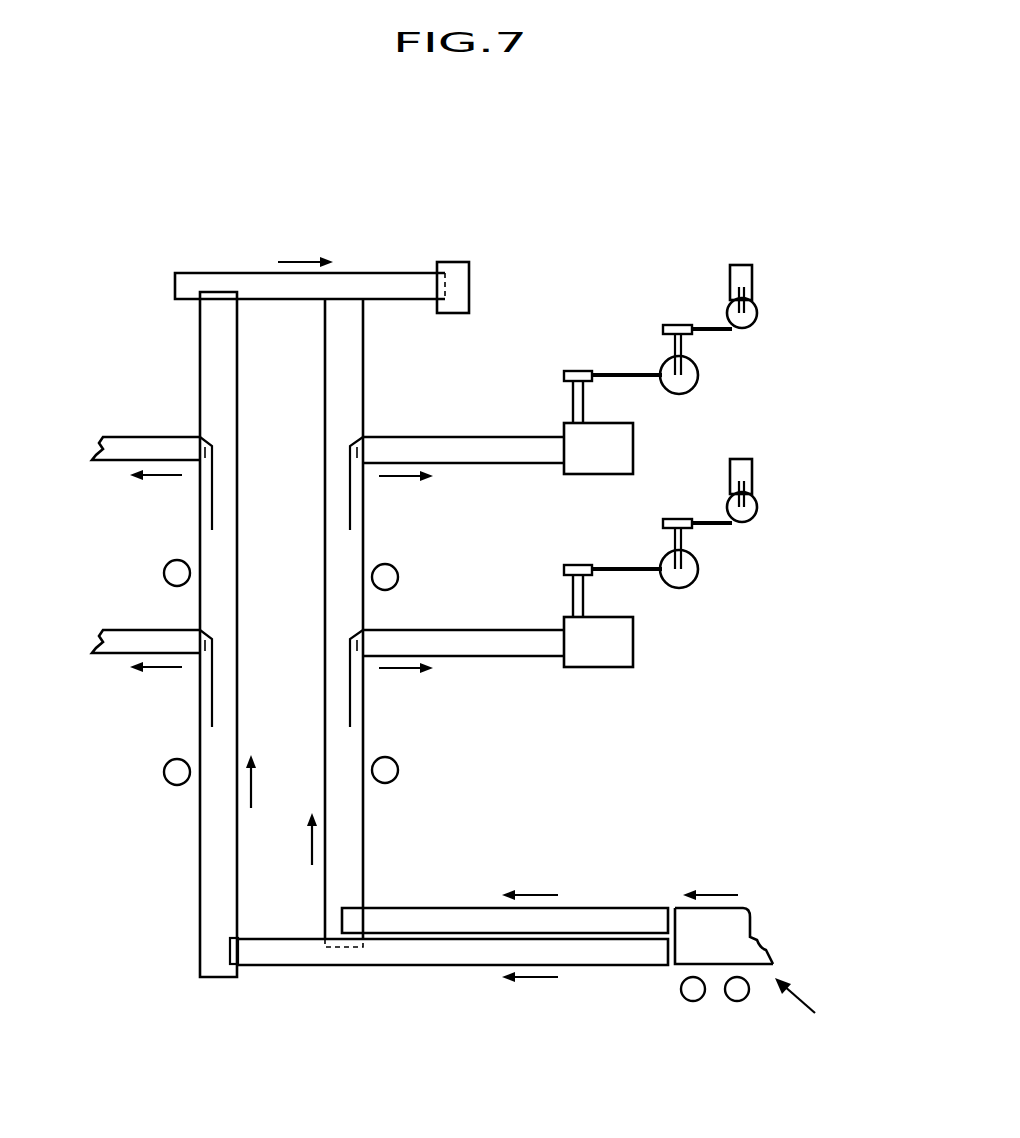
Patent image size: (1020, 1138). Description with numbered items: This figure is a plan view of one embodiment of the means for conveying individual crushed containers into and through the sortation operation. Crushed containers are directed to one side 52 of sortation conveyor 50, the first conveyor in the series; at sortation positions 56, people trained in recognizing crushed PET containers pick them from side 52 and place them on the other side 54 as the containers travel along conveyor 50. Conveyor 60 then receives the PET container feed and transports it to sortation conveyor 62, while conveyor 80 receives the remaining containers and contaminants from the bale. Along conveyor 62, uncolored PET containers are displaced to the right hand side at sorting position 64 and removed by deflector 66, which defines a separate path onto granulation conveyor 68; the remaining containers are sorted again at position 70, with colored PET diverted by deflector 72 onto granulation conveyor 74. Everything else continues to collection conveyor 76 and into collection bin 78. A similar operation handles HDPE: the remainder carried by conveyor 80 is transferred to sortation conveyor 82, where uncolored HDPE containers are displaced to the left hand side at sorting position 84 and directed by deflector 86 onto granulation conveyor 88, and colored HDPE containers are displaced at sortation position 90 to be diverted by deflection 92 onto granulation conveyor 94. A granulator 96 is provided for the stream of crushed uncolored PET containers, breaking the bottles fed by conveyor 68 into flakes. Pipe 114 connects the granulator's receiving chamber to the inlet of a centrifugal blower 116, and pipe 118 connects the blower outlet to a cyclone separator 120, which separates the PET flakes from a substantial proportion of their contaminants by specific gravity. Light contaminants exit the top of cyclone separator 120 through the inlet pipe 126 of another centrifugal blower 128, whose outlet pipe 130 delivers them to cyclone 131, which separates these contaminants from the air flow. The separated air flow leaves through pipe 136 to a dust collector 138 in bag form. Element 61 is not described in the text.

The sortation conveyor 50 is at (812, 1008).
The side of conveyor 52 is at (685, 965).
The side of conveyor 54 is at (743, 908).
The sortation positions 56 is at (696, 1001).
The conveyor 60 is at (577, 905).
The stop member 61 is at (342, 920).
The sortation conveyor 62 is at (323, 885).
The sorting position 64 is at (385, 756).
The deflector 66 is at (350, 690).
The granulation conveyor 68 is at (450, 657).
The sorting position 70 is at (385, 563).
The deflector 72 is at (350, 488).
The granulation conveyor 74 is at (443, 463).
The collection conveyor 76 is at (385, 301).
The collection bin 78 is at (470, 267).
The conveyor 80 is at (575, 967).
The sortation conveyor 82 is at (200, 852).
The sorting position 84 is at (175, 758).
The deflector 86 is at (213, 668).
The granulation conveyor 88 is at (107, 658).
The sortation position 90 is at (175, 560).
The deflection 92 is at (213, 477).
The granulation conveyor 94 is at (107, 465).
The granulator 96 is at (612, 476).
The pipe 114 is at (573, 398).
The centrifugal blower 116 is at (580, 371).
The pipe 118 is at (642, 372).
The cyclone separator 120 is at (683, 392).
The inlet pipe 126 is at (687, 345).
The centrifugal blower 128 is at (685, 325).
The outlet pipe 130 is at (718, 333).
The cyclone 131 is at (760, 320).
The pipe 136 is at (750, 288).
The dust collector 138 is at (742, 263).